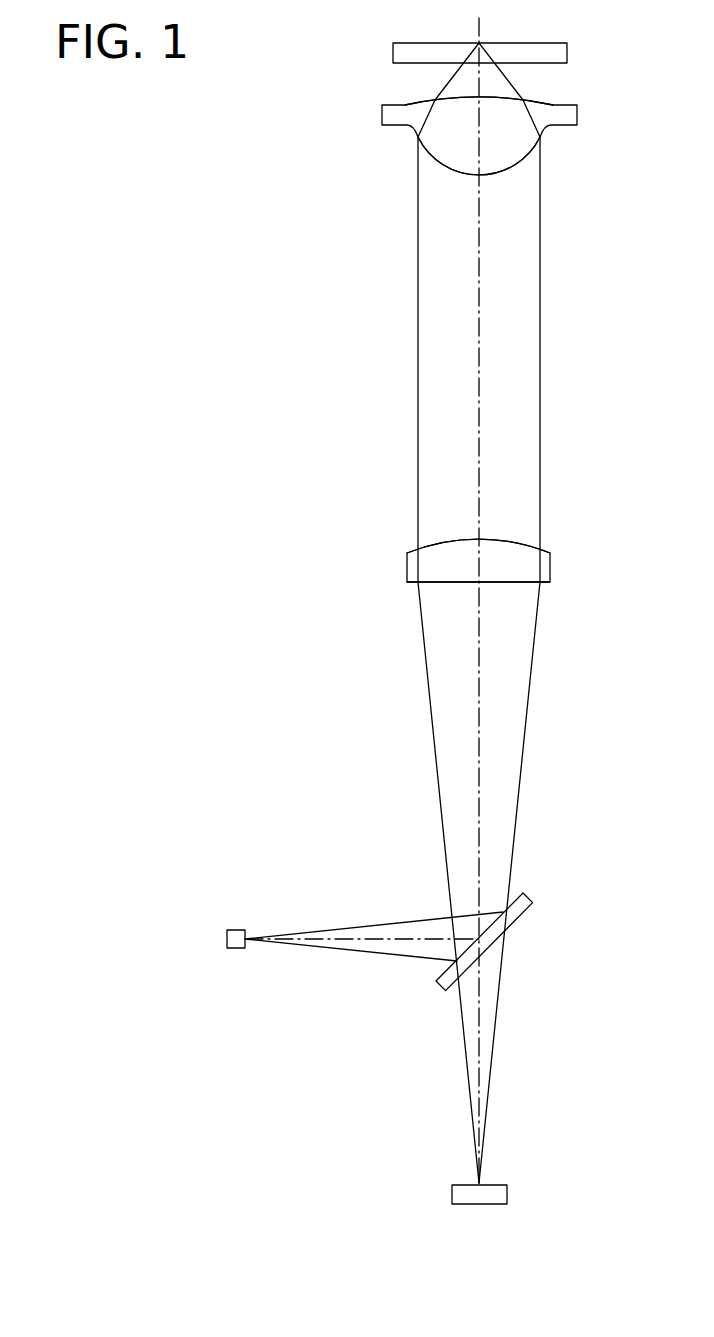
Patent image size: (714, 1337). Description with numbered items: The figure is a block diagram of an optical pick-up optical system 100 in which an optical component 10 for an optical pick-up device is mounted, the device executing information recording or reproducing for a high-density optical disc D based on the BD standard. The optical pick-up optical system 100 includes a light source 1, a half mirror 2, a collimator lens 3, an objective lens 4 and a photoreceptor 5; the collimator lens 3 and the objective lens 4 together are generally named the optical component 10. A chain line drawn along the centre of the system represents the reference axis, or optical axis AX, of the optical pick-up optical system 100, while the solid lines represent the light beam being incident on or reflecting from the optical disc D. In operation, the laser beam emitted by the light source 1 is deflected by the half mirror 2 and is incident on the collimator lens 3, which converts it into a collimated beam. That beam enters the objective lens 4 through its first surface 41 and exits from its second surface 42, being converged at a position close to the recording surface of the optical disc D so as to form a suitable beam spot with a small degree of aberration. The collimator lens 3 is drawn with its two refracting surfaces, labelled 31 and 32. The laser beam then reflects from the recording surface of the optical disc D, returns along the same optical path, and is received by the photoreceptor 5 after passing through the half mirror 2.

The optical pick-up optical system 100 is at (271, 376).
The light source 1 is at (227, 939).
The half mirror 2 is at (517, 917).
The collimator lens 3 is at (412, 568).
The first surface of first lens 31 is at (437, 585).
The second surface of first lens 32 is at (520, 543).
The objective lens 4 is at (505, 153).
The first surface 41 is at (442, 164).
The second surface 42 is at (533, 101).
The optical component 10 is at (475, 355).
The photoreceptor 5 is at (510, 1194).
The optical disc D is at (567, 53).
The optical axis AX is at (479, 328).